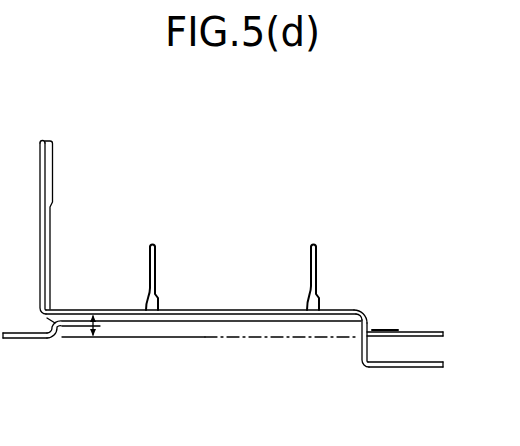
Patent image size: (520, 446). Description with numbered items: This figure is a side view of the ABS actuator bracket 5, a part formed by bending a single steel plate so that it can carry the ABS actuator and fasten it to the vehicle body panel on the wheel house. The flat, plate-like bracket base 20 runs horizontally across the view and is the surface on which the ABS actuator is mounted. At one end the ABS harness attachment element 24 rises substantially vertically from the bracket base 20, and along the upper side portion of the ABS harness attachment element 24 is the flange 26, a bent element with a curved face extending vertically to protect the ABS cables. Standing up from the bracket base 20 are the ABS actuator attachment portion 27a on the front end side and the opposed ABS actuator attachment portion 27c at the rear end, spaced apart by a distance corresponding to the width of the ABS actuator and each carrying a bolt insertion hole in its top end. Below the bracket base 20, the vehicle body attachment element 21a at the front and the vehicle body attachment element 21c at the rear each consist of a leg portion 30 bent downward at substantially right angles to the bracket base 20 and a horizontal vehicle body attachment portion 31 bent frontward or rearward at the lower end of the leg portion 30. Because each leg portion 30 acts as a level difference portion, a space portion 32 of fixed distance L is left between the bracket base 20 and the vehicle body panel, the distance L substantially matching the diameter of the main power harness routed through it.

The ABS actuator bracket 5 is at (267, 163).
The bracket base 20 is at (219, 309).
The ABS harness attachment element 24 is at (50, 239).
The flange 26 is at (53, 163).
The ABS actuator attachment portion 27a is at (157, 260).
The ABS actuator attachment portion 27c is at (317, 262).
The leg portion 30 is at (47, 322).
The vehicle body attachment element 21c is at (408, 332).
The horizontal vehicle body attachment portion 31 is at (17, 340).
The vehicle body attachment element 21a is at (47, 340).
The space portion 32 is at (205, 334).
The distance L is at (99, 337).